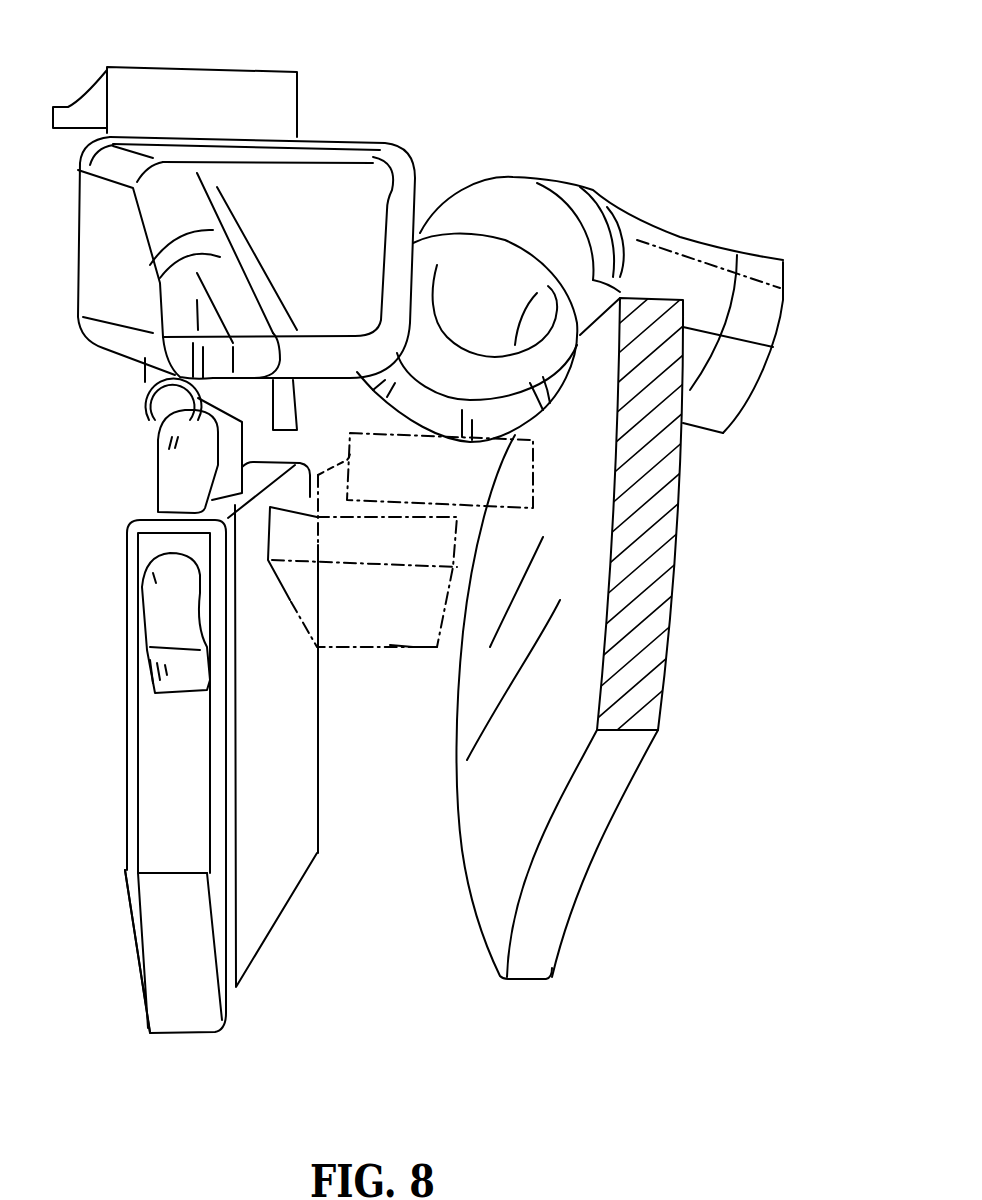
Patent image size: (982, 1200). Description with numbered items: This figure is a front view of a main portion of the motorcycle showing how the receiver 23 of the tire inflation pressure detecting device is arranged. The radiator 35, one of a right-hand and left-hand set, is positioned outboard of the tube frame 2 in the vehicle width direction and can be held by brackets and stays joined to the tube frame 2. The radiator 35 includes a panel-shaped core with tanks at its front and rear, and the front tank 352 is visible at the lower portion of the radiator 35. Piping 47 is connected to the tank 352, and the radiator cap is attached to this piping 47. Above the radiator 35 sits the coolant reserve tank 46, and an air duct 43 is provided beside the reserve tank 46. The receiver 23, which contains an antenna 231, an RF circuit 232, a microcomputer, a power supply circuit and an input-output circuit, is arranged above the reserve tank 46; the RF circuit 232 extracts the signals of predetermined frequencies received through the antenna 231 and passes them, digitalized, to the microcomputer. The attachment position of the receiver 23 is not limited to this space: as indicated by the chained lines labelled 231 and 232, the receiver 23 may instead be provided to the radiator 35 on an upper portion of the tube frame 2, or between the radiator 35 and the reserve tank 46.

The tube frame 2 is at (485, 828).
The receiver 23 is at (248, 90).
The radiator 35 is at (90, 797).
The air duct 43 is at (670, 240).
The coolant reserve tank 46 is at (397, 163).
The piping 47 is at (173, 458).
The antenna 231 is at (533, 483).
The RF circuit 232 is at (413, 647).
The tank 352 is at (153, 937).